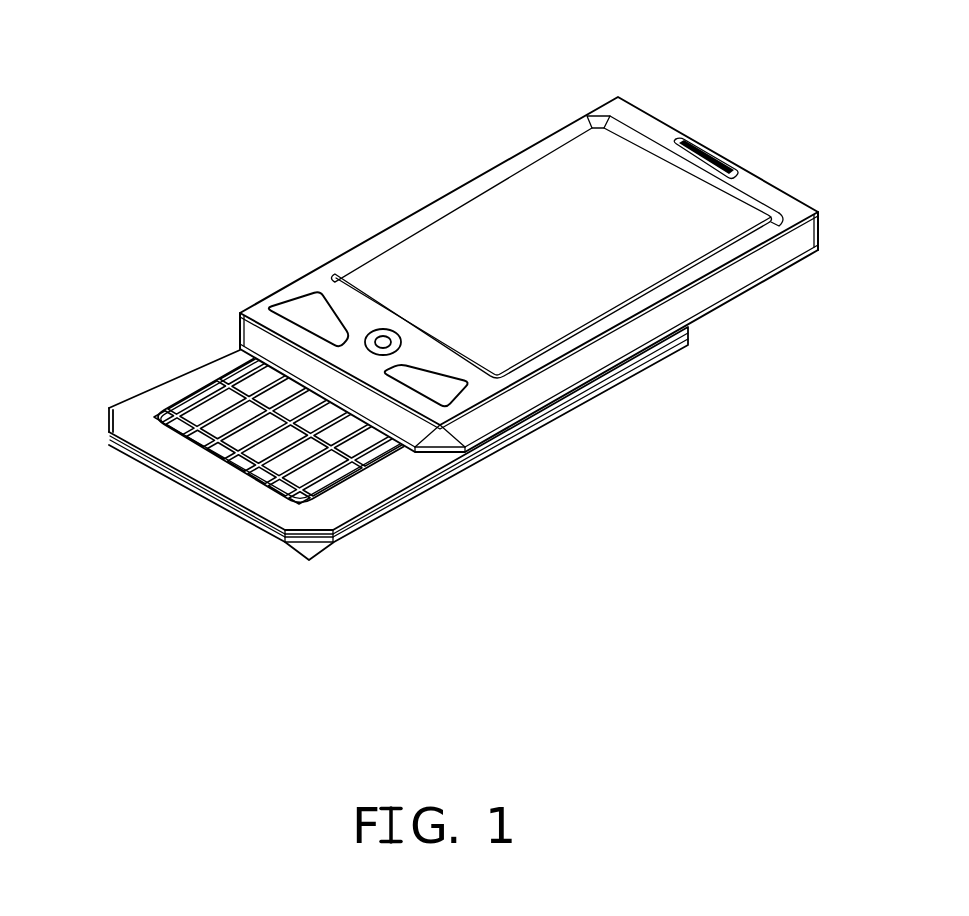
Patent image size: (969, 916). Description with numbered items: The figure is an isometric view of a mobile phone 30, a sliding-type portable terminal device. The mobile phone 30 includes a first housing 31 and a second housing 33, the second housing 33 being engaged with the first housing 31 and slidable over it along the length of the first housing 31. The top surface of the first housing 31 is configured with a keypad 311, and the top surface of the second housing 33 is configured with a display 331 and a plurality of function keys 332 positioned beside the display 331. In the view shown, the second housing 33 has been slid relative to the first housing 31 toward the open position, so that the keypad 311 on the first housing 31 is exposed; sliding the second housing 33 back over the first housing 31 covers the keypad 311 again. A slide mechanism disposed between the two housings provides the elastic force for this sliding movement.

The mobile phone 30 is at (510, 108).
The first housing 31 is at (145, 403).
The keypad 311 is at (210, 397).
The second housing 33 is at (764, 192).
The display 331 is at (476, 232).
The function keys 332 is at (308, 312).